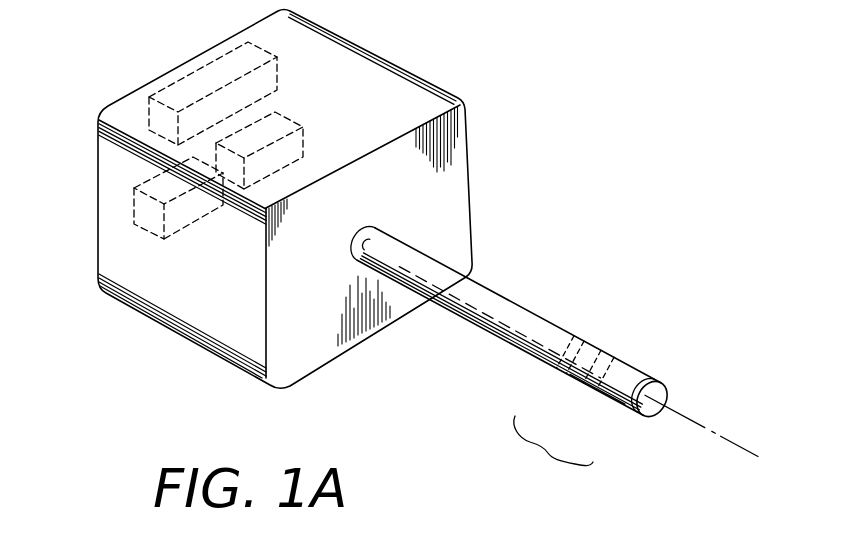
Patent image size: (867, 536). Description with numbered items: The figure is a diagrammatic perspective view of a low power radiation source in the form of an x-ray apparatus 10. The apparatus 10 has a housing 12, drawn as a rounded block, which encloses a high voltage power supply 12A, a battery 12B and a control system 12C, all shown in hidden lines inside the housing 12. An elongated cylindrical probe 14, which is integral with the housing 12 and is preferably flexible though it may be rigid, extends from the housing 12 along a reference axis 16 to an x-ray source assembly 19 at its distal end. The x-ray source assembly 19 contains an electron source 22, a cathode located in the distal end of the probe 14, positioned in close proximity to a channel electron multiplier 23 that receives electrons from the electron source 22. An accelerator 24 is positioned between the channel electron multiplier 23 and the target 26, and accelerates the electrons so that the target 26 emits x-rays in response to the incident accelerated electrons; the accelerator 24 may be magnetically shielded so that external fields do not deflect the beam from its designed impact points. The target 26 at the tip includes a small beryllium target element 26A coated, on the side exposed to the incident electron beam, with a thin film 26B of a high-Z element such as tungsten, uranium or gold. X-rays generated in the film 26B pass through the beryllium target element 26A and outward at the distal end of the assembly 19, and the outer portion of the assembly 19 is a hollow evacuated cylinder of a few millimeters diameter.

The x-ray apparatus 10 is at (553, 131).
The housing 12 is at (360, 52).
The high voltage power supply 12A is at (268, 57).
The battery 12B is at (292, 125).
The control system 12C is at (134, 215).
The elongated cylindrical probe 14 is at (482, 337).
The reference axis 16 is at (727, 435).
The x-ray source assembly 19 is at (553, 448).
The electron source 22 is at (587, 347).
The channel electron multiplier 23 is at (604, 352).
The accelerator 24 is at (610, 357).
The target 26 is at (663, 358).
The beryllium target element 26A is at (600, 395).
The high-Z film 26B is at (639, 413).